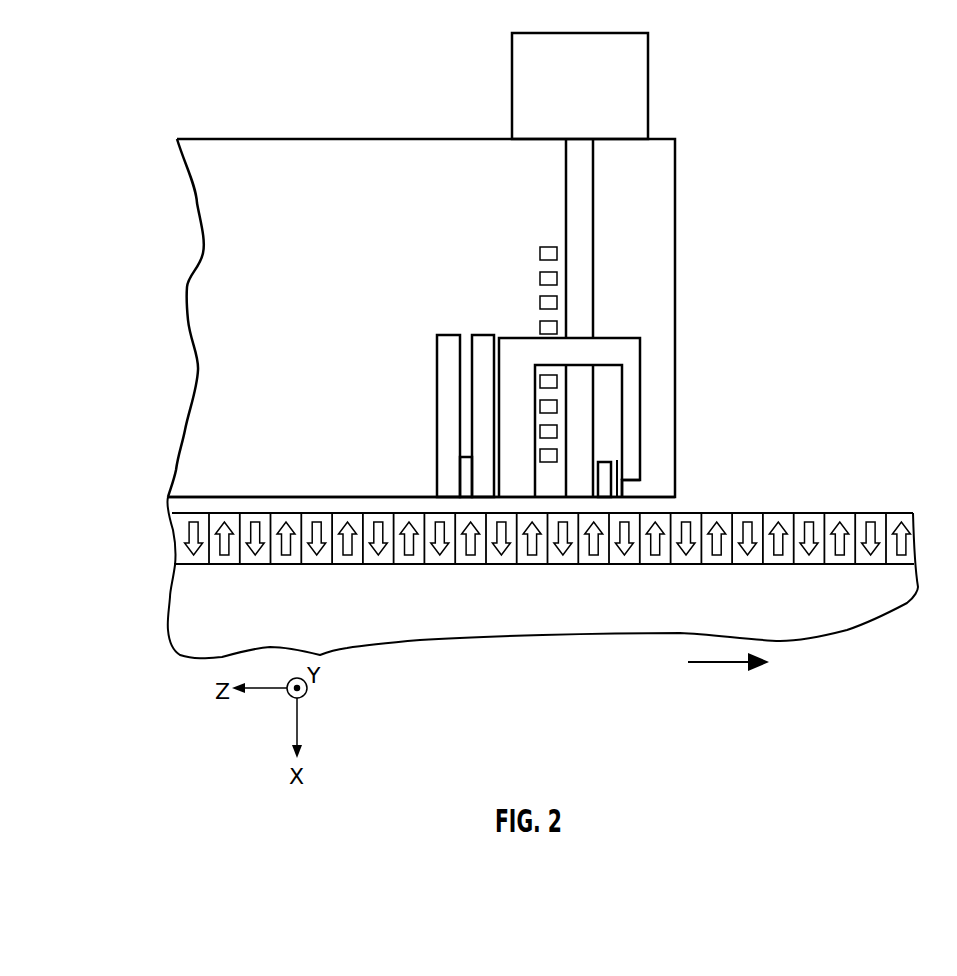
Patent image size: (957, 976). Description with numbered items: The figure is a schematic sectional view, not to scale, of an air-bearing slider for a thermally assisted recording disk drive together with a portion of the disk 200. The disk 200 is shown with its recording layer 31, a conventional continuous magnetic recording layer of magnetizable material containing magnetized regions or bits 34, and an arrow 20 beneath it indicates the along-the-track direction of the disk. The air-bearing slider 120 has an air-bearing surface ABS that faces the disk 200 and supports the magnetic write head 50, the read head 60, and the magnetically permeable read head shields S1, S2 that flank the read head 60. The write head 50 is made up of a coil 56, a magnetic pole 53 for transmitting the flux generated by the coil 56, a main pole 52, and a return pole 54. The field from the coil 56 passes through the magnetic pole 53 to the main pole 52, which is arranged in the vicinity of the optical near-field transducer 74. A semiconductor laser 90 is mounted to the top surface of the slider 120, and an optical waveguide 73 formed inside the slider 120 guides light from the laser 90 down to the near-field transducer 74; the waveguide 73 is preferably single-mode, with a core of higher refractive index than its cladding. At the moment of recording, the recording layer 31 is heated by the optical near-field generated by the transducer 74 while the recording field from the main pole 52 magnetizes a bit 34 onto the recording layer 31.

The medium motion direction 20 is at (717, 667).
The recording layer 31 is at (158, 516).
The bits 34 is at (870, 525).
The magnetic write head 50 is at (514, 277).
The main pole 52 is at (618, 491).
The magnetic pole 53 is at (631, 384).
The return pole 54 is at (518, 347).
The coil 56 is at (537, 252).
The read head 60 is at (460, 487).
The optical waveguide 73 is at (581, 284).
The optical near-field transducer 74 is at (603, 461).
The semiconductor laser 90 is at (636, 89).
The air-bearing slider 120 is at (208, 396).
The disk 200 is at (808, 625).
The read head shield S1 is at (447, 418).
The read head shield S2 is at (487, 335).
The air-bearing surface ABS is at (676, 505).